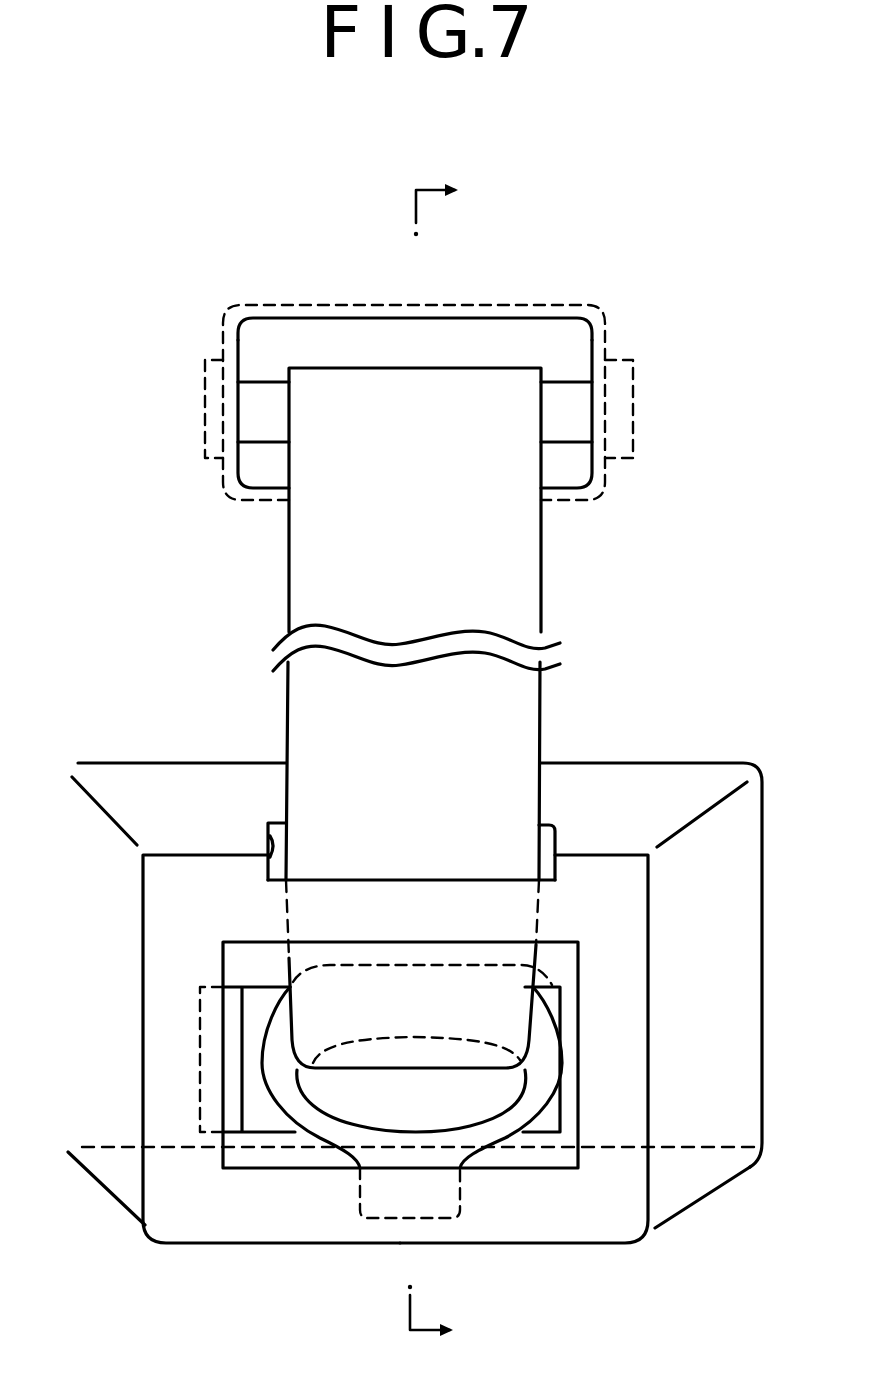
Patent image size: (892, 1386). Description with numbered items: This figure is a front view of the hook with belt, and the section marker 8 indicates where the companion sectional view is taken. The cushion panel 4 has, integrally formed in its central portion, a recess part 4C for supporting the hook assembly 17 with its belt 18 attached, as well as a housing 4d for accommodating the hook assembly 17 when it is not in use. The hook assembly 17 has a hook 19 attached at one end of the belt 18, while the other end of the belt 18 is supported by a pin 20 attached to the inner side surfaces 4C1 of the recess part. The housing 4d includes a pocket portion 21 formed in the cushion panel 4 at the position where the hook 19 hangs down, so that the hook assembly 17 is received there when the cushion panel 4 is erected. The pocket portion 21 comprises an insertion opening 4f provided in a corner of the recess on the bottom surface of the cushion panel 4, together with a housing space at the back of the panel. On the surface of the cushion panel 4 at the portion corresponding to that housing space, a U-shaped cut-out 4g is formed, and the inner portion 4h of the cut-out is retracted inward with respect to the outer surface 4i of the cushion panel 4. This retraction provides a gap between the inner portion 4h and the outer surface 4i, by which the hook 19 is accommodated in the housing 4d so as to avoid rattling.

The cushion panel 4 is at (57, 739).
The recess part 4C is at (572, 338).
The inner side surfaces 4C1 is at (240, 342).
The pin 20 is at (567, 425).
The belt 18 is at (518, 570).
The hook assembly 17 is at (522, 725).
The pocket portion 21 is at (268, 827).
The insertion opening 4f is at (547, 837).
The housing 4d is at (240, 967).
The outer surface 4i is at (607, 908).
The U-shaped cut-out 4g is at (562, 943).
The inner portion 4h is at (552, 1110).
The hook 19 is at (490, 1137).
The section line for FIG. 8 is at (455, 759).